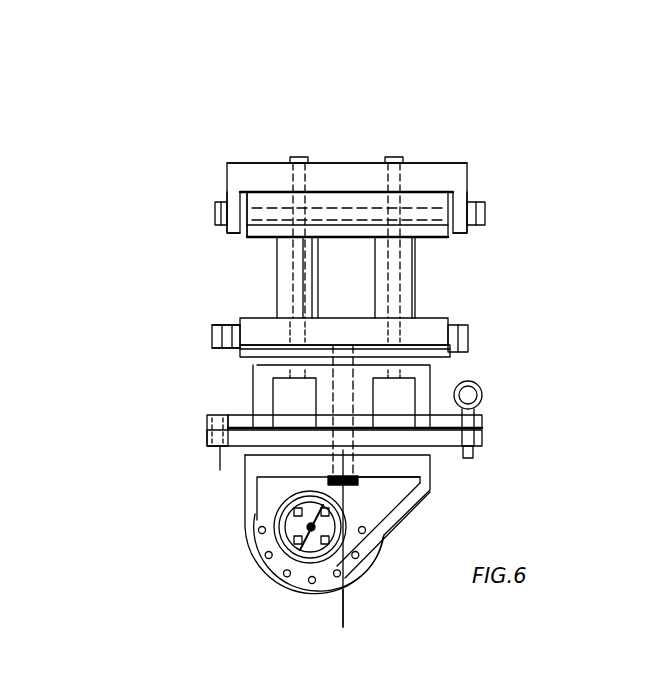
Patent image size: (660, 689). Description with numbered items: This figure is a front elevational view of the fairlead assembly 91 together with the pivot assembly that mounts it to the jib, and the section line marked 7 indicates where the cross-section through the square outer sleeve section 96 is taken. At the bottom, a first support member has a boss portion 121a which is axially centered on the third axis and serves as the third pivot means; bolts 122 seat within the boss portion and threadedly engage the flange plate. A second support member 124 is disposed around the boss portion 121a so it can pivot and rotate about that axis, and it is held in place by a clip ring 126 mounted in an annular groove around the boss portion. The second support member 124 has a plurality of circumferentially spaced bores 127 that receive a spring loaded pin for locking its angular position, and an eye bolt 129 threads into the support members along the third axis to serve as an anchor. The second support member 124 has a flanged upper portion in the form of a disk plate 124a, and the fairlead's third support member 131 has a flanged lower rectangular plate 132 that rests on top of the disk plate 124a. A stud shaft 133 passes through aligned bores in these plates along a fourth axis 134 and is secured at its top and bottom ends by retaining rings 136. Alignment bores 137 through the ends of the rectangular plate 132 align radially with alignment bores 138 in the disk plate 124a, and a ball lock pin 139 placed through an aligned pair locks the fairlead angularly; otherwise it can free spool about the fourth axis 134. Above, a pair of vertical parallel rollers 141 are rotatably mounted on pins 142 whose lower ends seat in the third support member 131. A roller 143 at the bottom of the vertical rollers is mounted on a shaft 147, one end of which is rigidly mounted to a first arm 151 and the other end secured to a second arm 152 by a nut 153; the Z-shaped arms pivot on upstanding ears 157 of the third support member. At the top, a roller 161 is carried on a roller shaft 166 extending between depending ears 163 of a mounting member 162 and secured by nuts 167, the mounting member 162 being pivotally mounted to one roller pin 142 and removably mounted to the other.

The fairlead assembly 91 is at (493, 170).
The mounting member 162 is at (462, 156).
The depending ears 163 is at (228, 192).
The nuts 167 is at (213, 218).
The roller 161 is at (356, 198).
The roller shaft 166 is at (261, 202).
The pins 142 is at (293, 158).
The rollers 141 is at (283, 263).
The ears 157 is at (267, 317).
The roller 143 is at (447, 320).
The second arm 152 is at (227, 325).
The shafts 147 is at (210, 332).
The nut 153 is at (217, 362).
The first arm 151 is at (468, 347).
The third support member 131 is at (257, 390).
The stud shaft 133 is at (358, 472).
The rectangular plate 132 is at (483, 420).
The disk plate 124a is at (483, 440).
The angular alignment bores 137 is at (215, 438).
The alignment bores 138 is at (222, 456).
The ball lock pin 139 is at (482, 395).
The second support member 124 is at (420, 527).
The retaining ring 136 is at (427, 507).
The bolts 122 is at (378, 540).
The clip ring 126 is at (360, 557).
The bores 127 is at (350, 590).
The eye bolt 129 is at (273, 565).
The boss portion 121a is at (260, 517).
The fourth axis 134 is at (343, 615).
The outer sleeve section 96 is at (484, 688).
The section line FIG. 7 is at (627, 688).